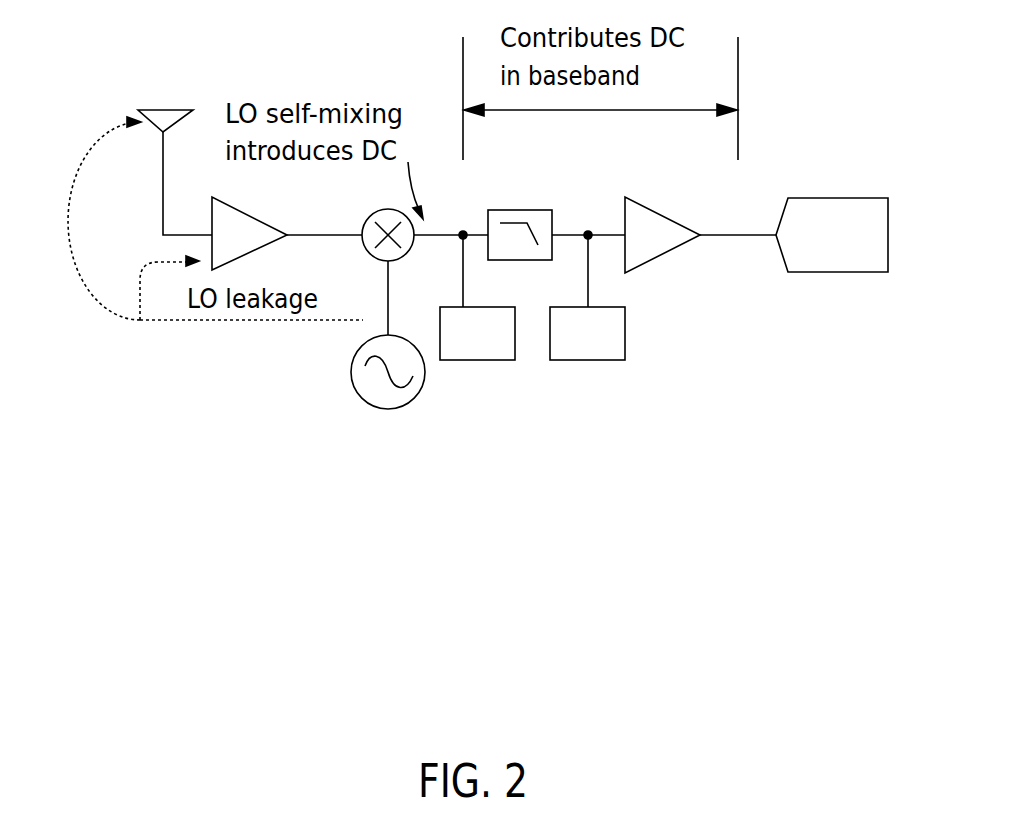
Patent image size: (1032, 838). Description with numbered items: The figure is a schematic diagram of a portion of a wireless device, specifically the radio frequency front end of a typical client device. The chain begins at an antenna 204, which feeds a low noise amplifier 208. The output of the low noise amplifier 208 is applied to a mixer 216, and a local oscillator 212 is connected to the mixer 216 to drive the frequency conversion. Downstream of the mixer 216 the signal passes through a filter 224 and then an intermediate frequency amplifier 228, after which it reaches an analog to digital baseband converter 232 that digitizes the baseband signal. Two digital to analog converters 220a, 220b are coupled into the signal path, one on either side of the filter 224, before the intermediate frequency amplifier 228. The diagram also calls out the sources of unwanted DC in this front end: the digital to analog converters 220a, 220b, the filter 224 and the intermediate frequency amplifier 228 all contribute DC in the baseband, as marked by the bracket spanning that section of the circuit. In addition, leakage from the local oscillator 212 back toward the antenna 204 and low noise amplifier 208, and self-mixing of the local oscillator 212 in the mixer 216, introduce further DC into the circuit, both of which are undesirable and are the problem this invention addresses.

The antenna 204 is at (175, 156).
The low noise amplifier 208 is at (287, 233).
The local oscillator 212 is at (388, 369).
The mixer 216 is at (407, 229).
The digital to analog converter 220a is at (477, 313).
The digital to analog converter 220b is at (587, 313).
The filter 224 is at (556, 249).
The intermediate frequency amplifier 228 is at (700, 235).
The analog to digital baseband converter 232 is at (832, 248).